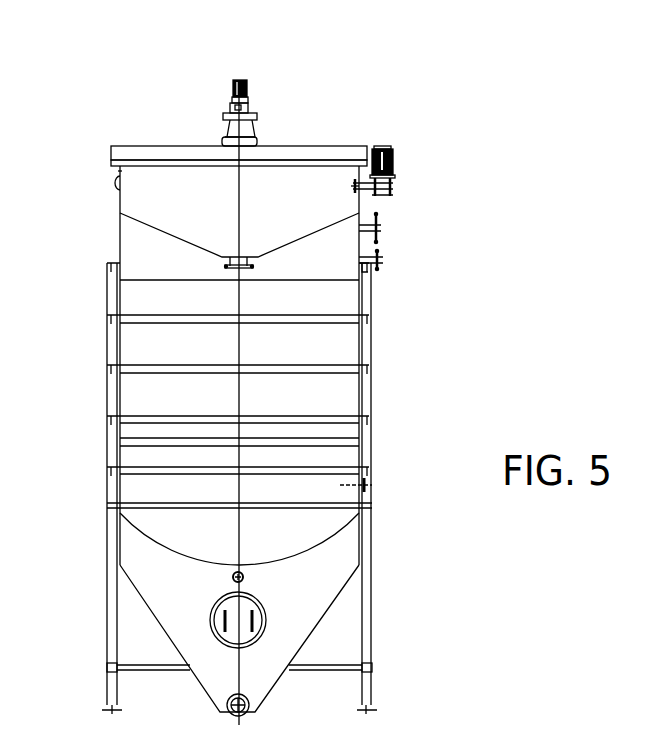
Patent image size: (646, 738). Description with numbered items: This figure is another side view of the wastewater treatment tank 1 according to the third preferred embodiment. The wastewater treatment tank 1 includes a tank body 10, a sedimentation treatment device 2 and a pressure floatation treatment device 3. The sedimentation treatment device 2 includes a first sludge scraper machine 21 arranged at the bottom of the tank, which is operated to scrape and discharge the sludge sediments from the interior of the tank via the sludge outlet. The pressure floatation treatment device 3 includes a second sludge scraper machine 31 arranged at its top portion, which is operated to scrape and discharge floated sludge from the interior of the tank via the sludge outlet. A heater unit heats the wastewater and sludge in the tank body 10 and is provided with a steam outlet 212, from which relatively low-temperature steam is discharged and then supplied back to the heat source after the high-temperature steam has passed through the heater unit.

The wastewater treatment tank 1 is at (450, 625).
The sedimentation treatment device 2 is at (80, 460).
The pressure floatation treatment device 3 is at (332, 127).
The tank body 10 is at (337, 600).
The first sludge scraper machine 21 is at (250, 108).
The second sludge scraper machine 31 is at (387, 146).
The steam outlet 212 is at (245, 576).